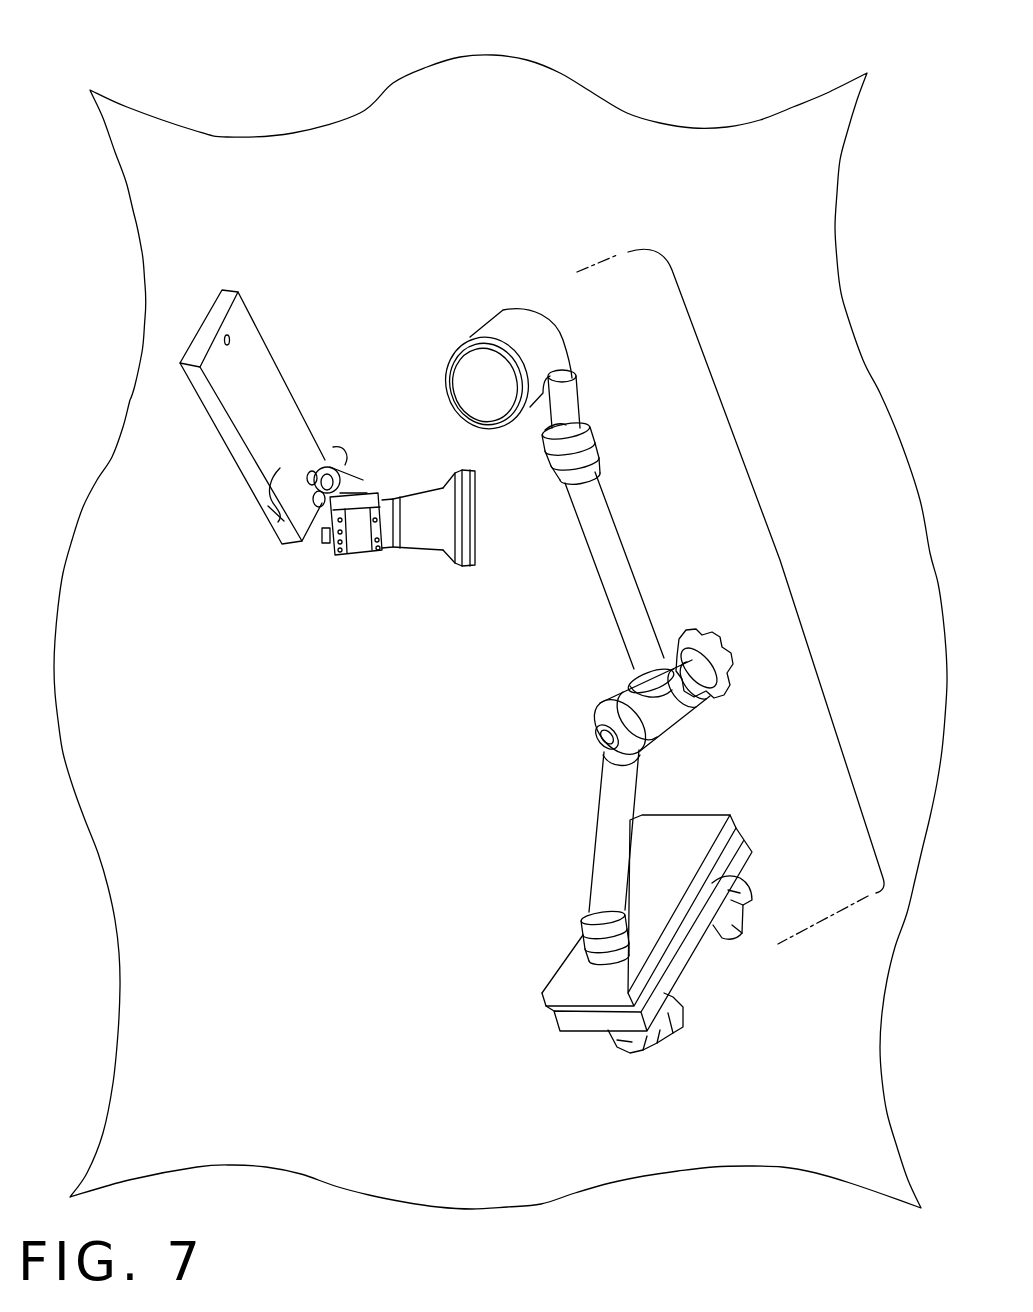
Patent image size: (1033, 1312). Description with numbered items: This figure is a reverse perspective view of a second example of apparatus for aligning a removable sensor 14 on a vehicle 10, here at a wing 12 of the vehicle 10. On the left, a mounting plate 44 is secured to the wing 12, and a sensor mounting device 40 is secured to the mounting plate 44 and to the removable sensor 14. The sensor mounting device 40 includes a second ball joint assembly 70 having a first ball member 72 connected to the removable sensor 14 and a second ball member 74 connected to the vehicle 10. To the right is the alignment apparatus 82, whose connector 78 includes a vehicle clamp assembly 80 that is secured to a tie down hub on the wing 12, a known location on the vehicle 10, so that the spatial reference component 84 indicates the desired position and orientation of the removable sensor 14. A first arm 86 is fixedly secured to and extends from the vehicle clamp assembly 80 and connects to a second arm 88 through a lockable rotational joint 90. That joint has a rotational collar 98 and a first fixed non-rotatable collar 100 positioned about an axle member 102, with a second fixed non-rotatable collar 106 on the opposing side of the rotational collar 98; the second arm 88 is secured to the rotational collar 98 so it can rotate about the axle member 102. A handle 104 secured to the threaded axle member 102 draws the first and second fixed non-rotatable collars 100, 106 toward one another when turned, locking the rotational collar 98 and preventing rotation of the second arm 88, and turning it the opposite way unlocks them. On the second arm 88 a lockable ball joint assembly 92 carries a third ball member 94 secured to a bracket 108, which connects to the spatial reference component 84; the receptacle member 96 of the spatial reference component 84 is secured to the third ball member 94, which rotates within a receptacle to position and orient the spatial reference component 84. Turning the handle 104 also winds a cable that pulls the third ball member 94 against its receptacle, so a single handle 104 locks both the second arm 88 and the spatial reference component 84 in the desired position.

The vehicle 10 is at (632, 82).
The wing 12 is at (387, 216).
The removable sensor 14 is at (358, 561).
The sensor mounting device 40 is at (306, 455).
The mounting plate 44 is at (251, 355).
The second ball joint assembly 70 is at (270, 511).
The first ball member 72 is at (357, 493).
The second ball member 74 is at (318, 458).
The connector 78 is at (540, 1012).
The vehicle clamp assembly 80 is at (568, 975).
The alignment apparatus 82 is at (782, 562).
The spatial reference component 84 is at (557, 325).
The first arm 86 is at (613, 851).
The second arm 88 is at (606, 534).
The lockable rotational joint 90 is at (685, 734).
The lockable ball joint assembly 92 is at (590, 417).
The third ball member 94 is at (542, 432).
The receptacle member 96 is at (512, 325).
The rotational collar 98 is at (707, 712).
The first fixed non-rotatable collar 100 is at (600, 701).
The axle member 102 is at (604, 745).
The handle 104 is at (699, 648).
The second fixed non-rotatable collar 106 is at (675, 656).
The bracket 108 is at (583, 383).